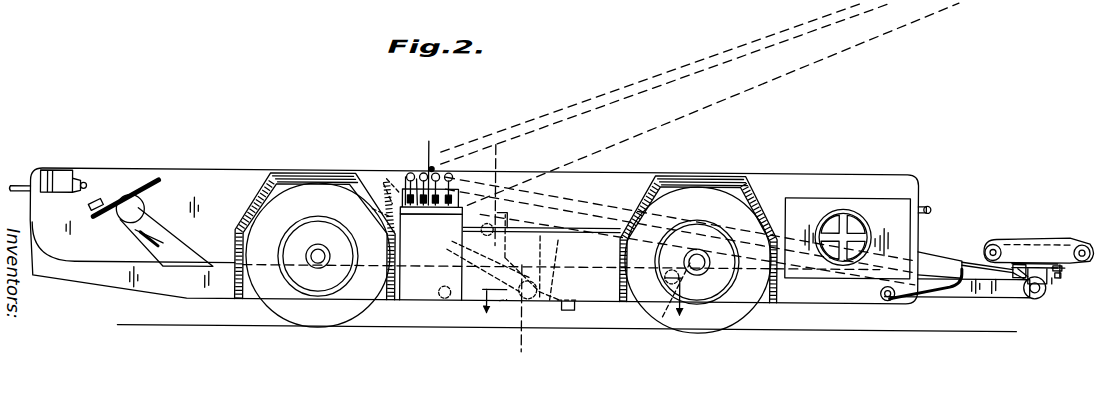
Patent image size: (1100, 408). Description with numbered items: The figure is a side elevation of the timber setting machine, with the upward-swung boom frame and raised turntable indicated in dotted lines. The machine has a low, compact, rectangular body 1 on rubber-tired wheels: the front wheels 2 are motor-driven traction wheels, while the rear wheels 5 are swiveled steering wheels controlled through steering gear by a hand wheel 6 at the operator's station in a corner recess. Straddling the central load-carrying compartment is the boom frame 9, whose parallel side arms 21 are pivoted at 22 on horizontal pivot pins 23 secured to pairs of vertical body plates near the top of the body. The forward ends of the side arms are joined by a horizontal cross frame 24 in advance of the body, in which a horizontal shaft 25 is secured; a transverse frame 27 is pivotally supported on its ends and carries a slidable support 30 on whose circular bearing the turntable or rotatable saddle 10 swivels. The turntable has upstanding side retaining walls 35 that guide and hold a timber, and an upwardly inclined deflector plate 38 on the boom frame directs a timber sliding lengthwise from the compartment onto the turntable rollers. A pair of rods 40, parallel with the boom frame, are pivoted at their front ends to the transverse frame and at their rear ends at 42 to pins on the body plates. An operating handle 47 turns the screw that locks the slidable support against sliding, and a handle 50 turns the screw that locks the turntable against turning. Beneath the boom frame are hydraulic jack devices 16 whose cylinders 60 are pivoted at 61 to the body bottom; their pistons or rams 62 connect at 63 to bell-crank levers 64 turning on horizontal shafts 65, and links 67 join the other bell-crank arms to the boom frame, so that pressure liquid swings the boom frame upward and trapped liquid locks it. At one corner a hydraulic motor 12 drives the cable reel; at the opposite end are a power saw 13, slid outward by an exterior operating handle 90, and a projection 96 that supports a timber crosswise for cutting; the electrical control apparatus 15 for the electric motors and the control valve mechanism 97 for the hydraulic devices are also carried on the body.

The body 1 is at (758, 175).
The front wheels 2 is at (745, 312).
The rear wheels 5 is at (283, 308).
The hand wheel 6 is at (135, 183).
The boom frame 9 is at (689, 62).
The turntable 10 is at (1032, 235).
The hydraulic motor 12 is at (485, 153).
The power saw 13 is at (581, 304).
The electrical control apparatus 15 is at (848, 208).
The hydraulic jack devices 16 is at (577, 307).
The side arms 21 is at (812, 70).
The pivot 22 is at (383, 182).
The horizontal pivot pins 23 is at (372, 210).
The cross frame 24 is at (1036, 296).
The horizontal shaft 25 is at (1033, 278).
The transverse frame 27 is at (1020, 274).
The slidable support 30 is at (1063, 266).
The side retaining walls 35 is at (1010, 237).
The deflector plate 38 is at (960, 252).
The rods 40 is at (442, 162).
The rear pivot of rods 42 is at (406, 178).
The operating handle 47 is at (1060, 273).
The handle 50 is at (1055, 278).
The cylinders 60 is at (565, 306).
The cylinder pivot 61 is at (663, 318).
The pistons or rams 62 is at (558, 240).
The ram pivotal connection 63 is at (540, 236).
The bell-crank levers 64 is at (506, 305).
The horizontal shafts 65 is at (505, 270).
The links 67 is at (447, 250).
The operating handle 90 is at (934, 201).
The projection 96 is at (927, 288).
The control valve mechanism 97 is at (422, 163).